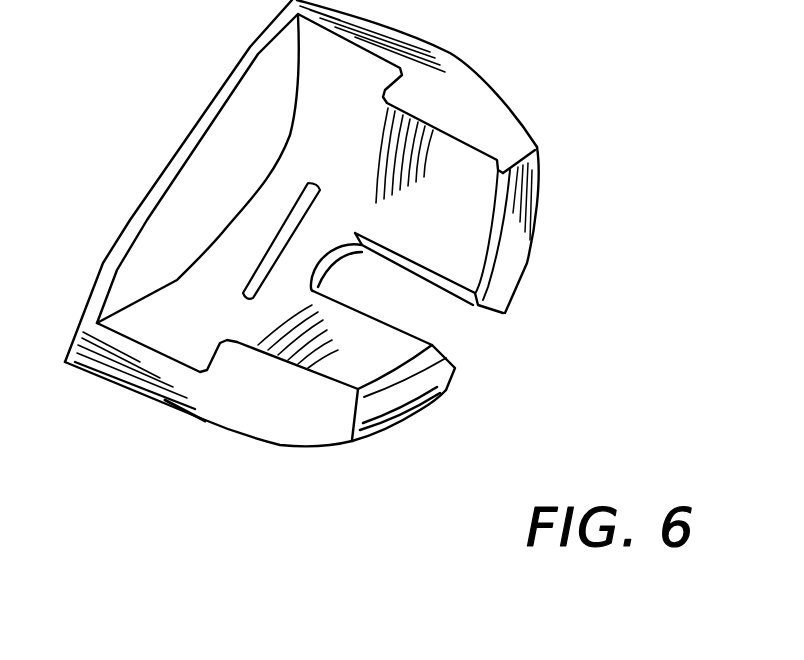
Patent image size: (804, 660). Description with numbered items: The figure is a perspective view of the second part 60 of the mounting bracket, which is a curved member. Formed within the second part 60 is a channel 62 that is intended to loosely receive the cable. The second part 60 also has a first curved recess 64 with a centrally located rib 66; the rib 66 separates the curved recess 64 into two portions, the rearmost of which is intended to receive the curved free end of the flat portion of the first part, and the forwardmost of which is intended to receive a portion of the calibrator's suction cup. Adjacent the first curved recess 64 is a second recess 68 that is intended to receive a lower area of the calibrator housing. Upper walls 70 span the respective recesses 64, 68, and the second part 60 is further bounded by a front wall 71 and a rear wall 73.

The second part 60 is at (624, 132).
The channel 62 is at (474, 304).
The first curved recess 64 is at (170, 317).
The rib 66 is at (258, 256).
The second recess 68 is at (372, 222).
The upper walls 70 is at (480, 103).
The front wall 71 is at (510, 263).
The rear wall 73 is at (203, 116).